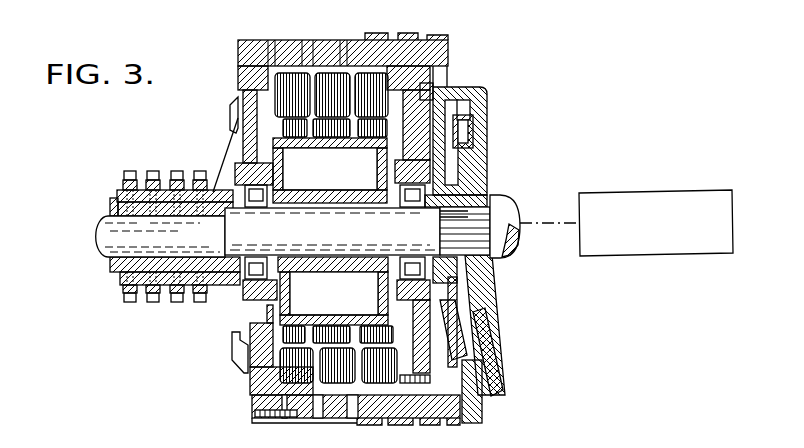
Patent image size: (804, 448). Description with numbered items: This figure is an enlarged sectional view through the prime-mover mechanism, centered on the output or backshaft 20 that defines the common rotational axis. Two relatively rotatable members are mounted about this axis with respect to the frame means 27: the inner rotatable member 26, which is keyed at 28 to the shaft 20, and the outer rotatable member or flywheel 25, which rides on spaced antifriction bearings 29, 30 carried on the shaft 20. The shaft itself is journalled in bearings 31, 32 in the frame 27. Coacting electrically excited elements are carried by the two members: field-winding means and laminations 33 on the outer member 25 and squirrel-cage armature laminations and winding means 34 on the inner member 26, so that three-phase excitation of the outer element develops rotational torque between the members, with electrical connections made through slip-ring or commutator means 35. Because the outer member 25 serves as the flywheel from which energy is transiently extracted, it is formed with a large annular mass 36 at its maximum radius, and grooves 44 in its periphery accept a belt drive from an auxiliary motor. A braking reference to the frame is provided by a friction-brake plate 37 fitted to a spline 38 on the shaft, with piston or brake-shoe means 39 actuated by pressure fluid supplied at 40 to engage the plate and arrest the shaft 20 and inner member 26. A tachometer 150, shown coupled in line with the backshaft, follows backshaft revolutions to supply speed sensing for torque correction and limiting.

The output or backshaft 20 is at (522, 255).
The outer rotatable member or flywheel 25 is at (455, 70).
The inner rotatable member 26 is at (268, 317).
The frame means 27 is at (484, 161).
The key 28 is at (316, 206).
The antifriction bearing 29 is at (256, 207).
The antifriction bearing 30 is at (405, 207).
The bearing 31 is at (168, 214).
The bearing 32 is at (466, 238).
The field-winding means and laminations 33 is at (345, 74).
The armature laminations and winding means 34 is at (331, 134).
The slip-rings and/or commutator means 35 is at (163, 170).
The large annular mass 36 is at (281, 43).
The friction-brake plate 37 is at (457, 291).
The spline 38 is at (469, 225).
The piston or brake-shoe means 39 is at (485, 125).
The pressure fluid supply 40 is at (488, 396).
The grooves 44 is at (416, 38).
The tachometer 150 is at (658, 256).